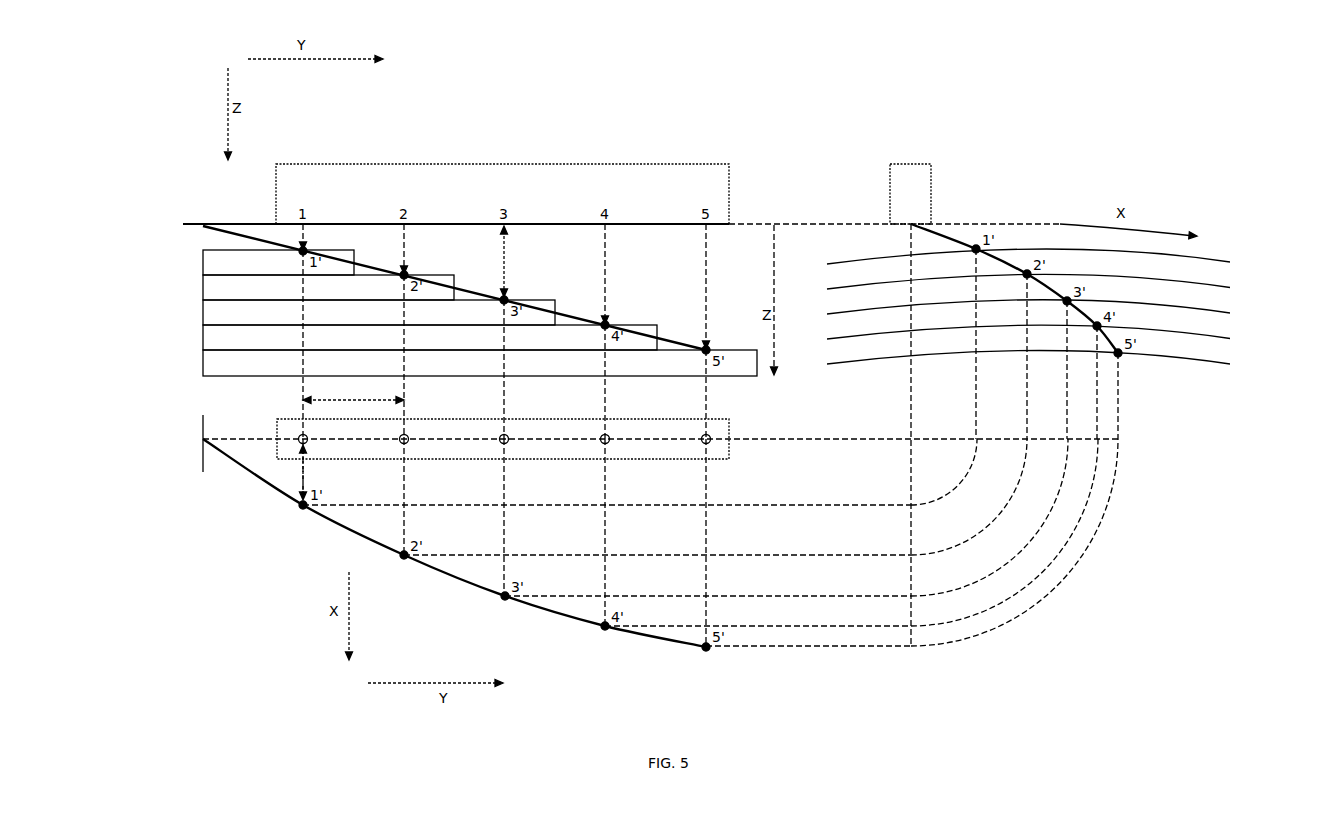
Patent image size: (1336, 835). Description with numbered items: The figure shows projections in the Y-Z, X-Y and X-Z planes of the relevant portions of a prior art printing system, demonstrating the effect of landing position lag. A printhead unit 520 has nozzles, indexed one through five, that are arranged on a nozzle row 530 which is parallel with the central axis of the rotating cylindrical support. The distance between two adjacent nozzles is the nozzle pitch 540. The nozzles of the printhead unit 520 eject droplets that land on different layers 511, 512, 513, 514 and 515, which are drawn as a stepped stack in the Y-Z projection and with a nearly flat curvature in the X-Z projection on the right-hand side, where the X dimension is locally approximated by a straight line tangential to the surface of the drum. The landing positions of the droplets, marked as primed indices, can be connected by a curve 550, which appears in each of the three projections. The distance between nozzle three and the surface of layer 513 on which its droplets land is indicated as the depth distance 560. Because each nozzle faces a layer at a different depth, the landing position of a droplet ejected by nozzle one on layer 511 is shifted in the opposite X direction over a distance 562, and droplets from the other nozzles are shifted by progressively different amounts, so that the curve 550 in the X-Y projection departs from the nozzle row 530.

The layer 511 is at (228, 262).
The layer 512 is at (228, 286).
The layer 513 is at (228, 308).
The layer 514 is at (228, 341).
The layer 515 is at (228, 369).
The printhead unit 520 is at (906, 175).
The nozzle row 530 is at (270, 440).
The nozzle pitch 540 is at (353, 392).
The curve 550 is at (636, 330).
The distance Δz[3][3] 560 is at (508, 272).
The distance Δx[1][1] 562 is at (302, 462).